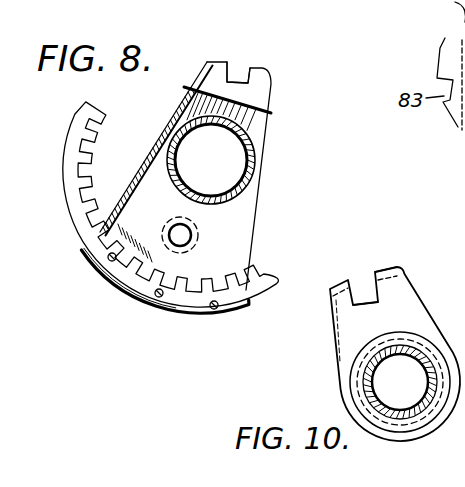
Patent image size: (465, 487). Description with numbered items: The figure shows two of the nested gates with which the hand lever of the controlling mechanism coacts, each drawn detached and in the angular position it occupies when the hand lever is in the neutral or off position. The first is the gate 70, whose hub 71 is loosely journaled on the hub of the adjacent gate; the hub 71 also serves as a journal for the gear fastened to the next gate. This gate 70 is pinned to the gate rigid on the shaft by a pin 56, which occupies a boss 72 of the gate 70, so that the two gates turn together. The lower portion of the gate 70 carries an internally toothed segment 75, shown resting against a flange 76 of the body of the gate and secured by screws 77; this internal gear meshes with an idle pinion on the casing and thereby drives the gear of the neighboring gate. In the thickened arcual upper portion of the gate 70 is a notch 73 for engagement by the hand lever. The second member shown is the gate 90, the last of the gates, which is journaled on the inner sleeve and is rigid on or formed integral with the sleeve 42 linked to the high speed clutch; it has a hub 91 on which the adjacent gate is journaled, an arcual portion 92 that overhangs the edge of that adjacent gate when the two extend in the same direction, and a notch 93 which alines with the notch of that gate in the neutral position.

In FIG. 8, the gate 70 is at (185, 176).
In FIG. 8, the hub 71 is at (255, 171).
In FIG. 8, the notch 73 is at (252, 70).
In FIG. 8, the pin 56 is at (190, 234).
In FIG. 8, the boss 72 is at (186, 252).
In FIG. 8, the internally toothed segment 75 is at (78, 207).
In FIG. 8, the flange 76 is at (215, 316).
In FIG. 8, the screws 77 is at (152, 300).
In FIG. 10, the gate 90 is at (338, 346).
In FIG. 10, the hub 91 is at (368, 338).
In FIG. 10, the arcual portion 92 is at (388, 271).
In FIG. 10, the notch 93 is at (358, 278).
In FIG. 10, the sleeve 42 is at (430, 377).